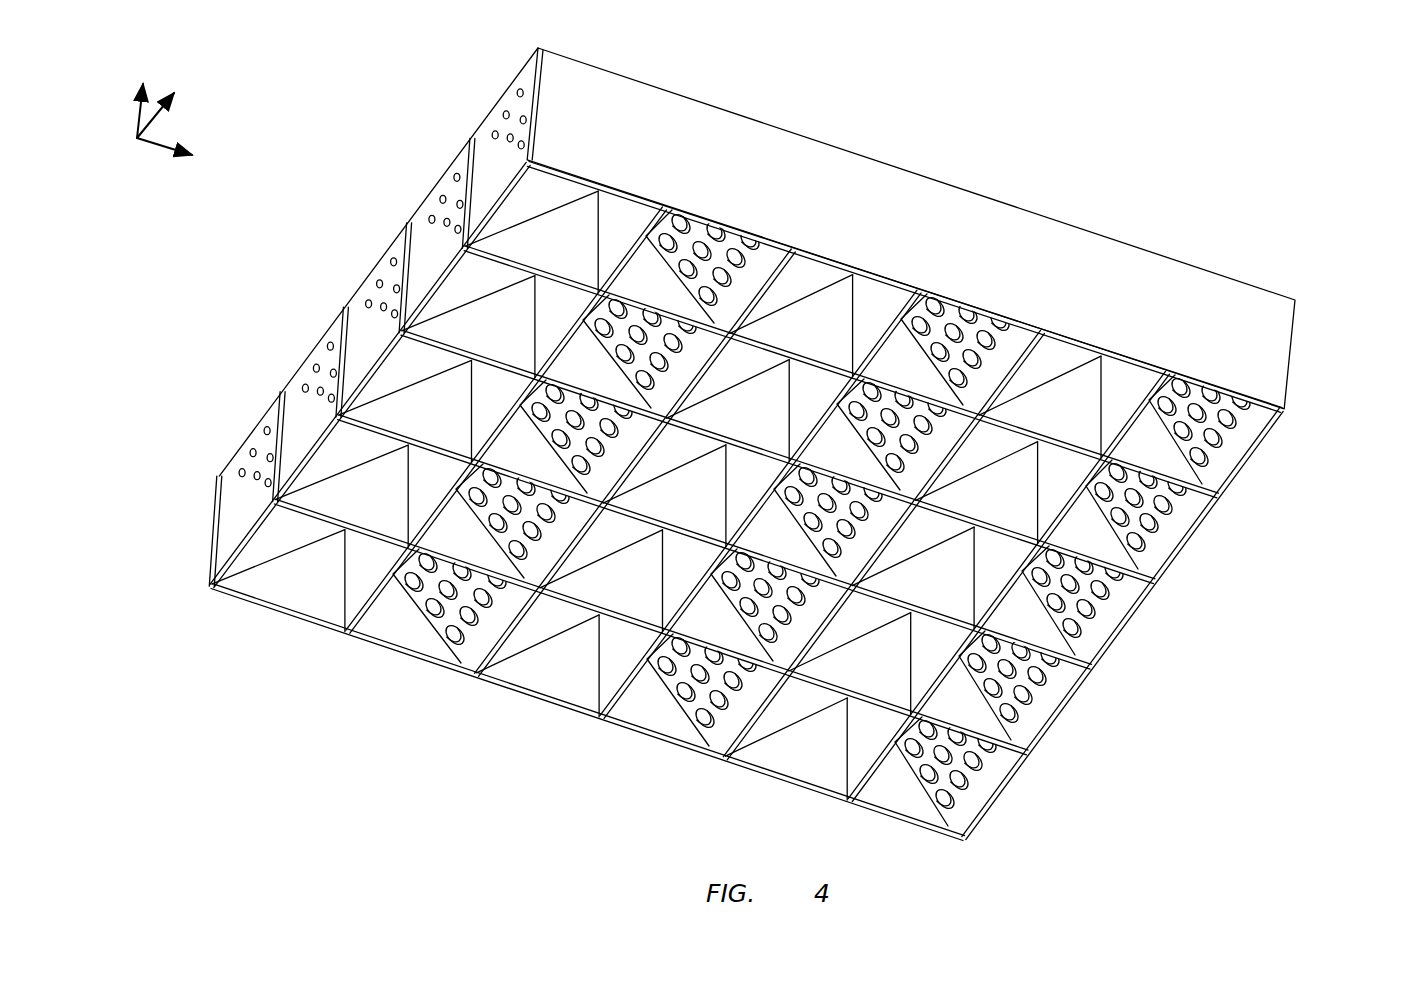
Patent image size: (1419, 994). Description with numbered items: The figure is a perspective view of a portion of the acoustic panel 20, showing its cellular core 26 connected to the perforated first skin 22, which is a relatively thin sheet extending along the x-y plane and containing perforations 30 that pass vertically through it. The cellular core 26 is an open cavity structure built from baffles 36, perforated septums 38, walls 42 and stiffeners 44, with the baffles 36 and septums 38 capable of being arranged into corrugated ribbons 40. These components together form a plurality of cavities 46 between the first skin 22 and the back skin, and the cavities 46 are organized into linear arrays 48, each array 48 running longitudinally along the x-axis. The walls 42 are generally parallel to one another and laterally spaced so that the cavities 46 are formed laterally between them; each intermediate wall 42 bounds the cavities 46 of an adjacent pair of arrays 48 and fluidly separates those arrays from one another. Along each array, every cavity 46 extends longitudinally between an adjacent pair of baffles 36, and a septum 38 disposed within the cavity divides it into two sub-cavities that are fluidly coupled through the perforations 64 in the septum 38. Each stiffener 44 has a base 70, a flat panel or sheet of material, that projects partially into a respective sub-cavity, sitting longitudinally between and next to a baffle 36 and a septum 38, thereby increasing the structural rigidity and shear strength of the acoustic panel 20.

The acoustic panel 20 is at (1058, 184).
The first skin 22 is at (503, 95).
The cellular core 26 is at (1300, 376).
The perforations 30 is at (480, 130).
The baffles 36 is at (256, 555).
The perforated septums 38 is at (428, 595).
The corrugated ribbons 40 is at (430, 284).
The walls 42 is at (1268, 325).
The stiffeners 44 is at (352, 598).
The cavities 46 is at (306, 580).
The linear arrays 48 is at (742, 455).
The perforations 64 is at (722, 226).
The base 70 is at (632, 222).